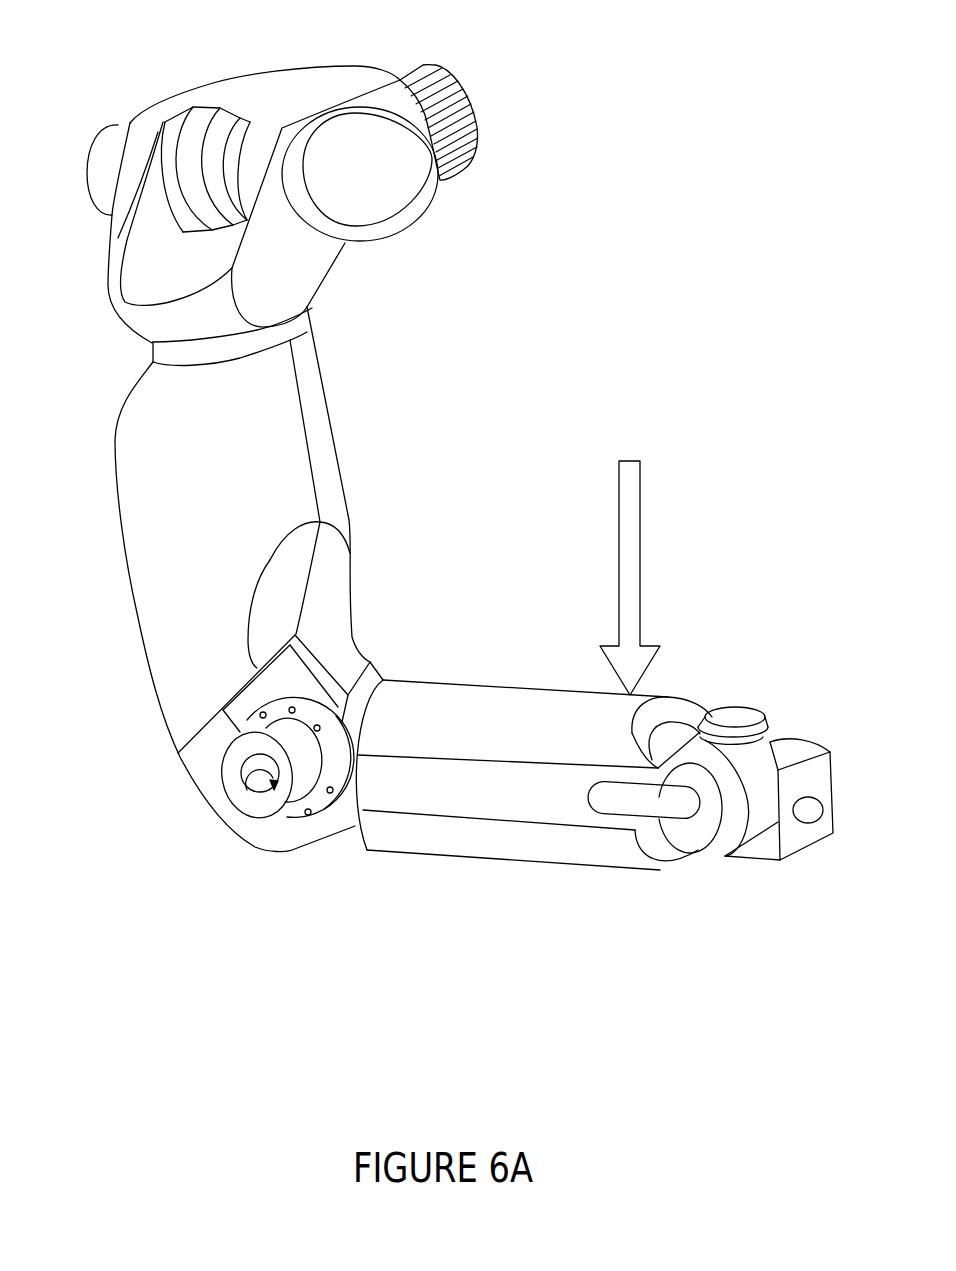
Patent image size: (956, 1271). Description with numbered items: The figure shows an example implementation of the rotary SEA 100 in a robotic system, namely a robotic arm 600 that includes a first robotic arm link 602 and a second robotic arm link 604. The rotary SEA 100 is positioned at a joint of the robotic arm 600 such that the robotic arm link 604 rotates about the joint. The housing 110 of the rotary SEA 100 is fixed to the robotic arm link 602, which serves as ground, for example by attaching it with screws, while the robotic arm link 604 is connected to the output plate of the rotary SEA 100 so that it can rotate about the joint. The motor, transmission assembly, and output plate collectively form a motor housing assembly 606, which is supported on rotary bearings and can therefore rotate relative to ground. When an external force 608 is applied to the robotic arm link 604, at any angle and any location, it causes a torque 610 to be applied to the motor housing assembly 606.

The robotic arm 600 is at (176, 1015).
The robotic arm link 602 is at (57, 342).
The robotic arm link 604 is at (695, 888).
The motor housing assembly 606 is at (303, 782).
The external force 608 is at (642, 551).
The torque 610 is at (232, 780).
The housing 110 is at (305, 665).
The rotary series elastic actuator (SEA) 100 is at (330, 702).